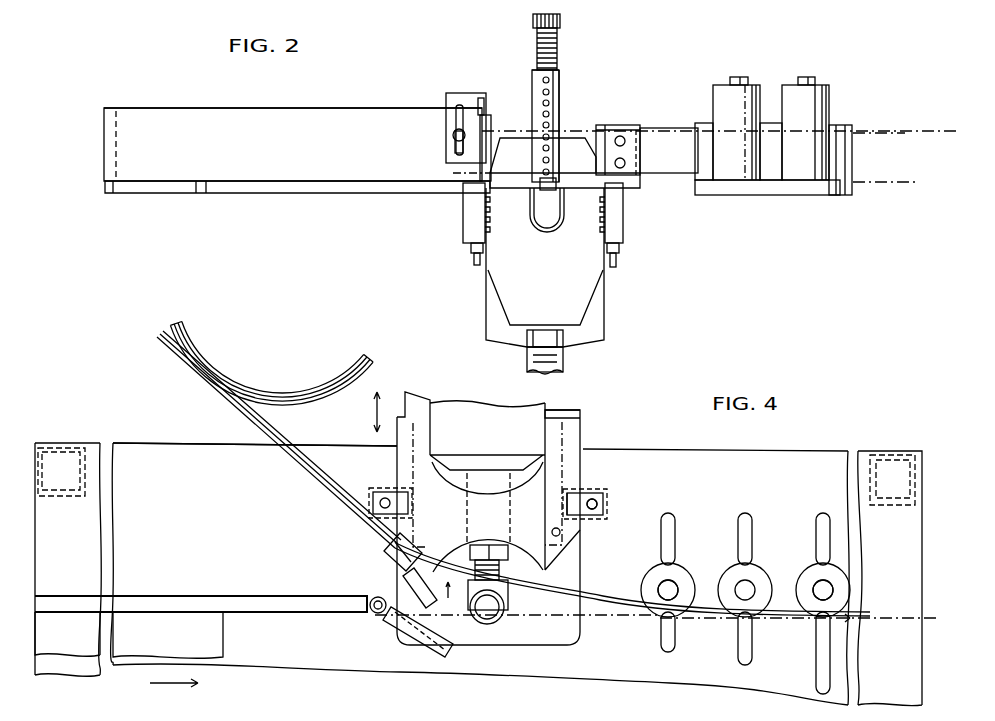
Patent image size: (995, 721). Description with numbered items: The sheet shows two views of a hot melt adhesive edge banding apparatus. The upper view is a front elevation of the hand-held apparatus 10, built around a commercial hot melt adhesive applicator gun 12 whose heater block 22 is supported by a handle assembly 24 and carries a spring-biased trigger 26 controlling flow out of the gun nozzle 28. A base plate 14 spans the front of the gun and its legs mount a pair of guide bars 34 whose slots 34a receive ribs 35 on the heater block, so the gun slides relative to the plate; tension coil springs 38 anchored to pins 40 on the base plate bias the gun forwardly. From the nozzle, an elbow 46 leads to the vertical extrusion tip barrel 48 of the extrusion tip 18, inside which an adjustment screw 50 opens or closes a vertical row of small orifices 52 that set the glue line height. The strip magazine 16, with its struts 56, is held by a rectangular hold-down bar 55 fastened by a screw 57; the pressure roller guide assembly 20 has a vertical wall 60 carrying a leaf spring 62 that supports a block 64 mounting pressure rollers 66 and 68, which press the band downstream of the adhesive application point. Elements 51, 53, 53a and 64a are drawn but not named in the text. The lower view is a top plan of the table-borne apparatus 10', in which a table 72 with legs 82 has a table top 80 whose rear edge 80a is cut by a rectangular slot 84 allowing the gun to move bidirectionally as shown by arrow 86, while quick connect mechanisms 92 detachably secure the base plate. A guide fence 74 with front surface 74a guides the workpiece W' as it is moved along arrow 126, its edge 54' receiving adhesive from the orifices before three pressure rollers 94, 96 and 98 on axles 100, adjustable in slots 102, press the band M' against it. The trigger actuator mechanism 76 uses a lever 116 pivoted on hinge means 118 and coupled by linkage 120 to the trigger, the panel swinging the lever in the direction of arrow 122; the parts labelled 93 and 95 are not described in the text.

In FIG. 2, the hot melt adhesive applicator gun type edge banding apparatus 10 is at (648, 39).
In FIG. 4, the apparatus 10' is at (777, 430).
In FIG. 2, the hot melt adhesive applicator gun 12 is at (615, 295).
In FIG. 4, the hot melt adhesive applicator gun 12 is at (566, 409).
In FIG. 2, the base plate 14 is at (590, 198).
In FIG. 2, the strip or band material magazine 16 is at (190, 108).
In FIG. 4, the strip or band material magazine 16 is at (321, 398).
In FIG. 2, the extrusion tip 18 is at (573, 103).
In FIG. 4, the extrusion tip 18 is at (508, 631).
In FIG. 2, the pressure roller guide assembly 20 is at (787, 59).
In FIG. 2, the heater block 22 is at (506, 283).
In FIG. 2, the handle assembly 24 is at (525, 360).
In FIG. 2, the trigger 26 is at (566, 360).
In FIG. 4, the gun nozzle 28 is at (476, 475).
In FIG. 2, the guide bars 34 is at (623, 240).
In FIG. 4, the guide bars 34 is at (582, 413).
In FIG. 2, the slots 34a is at (612, 210).
In FIG. 2, the ribs 35 is at (490, 200).
In FIG. 2, the tension coil springs 38 is at (470, 249).
In FIG. 2, the pins 40 is at (474, 263).
In FIG. 2, the elbow 46 is at (547, 220).
In FIG. 4, the elbow 46 is at (508, 590).
In FIG. 2, the extrusion tip barrel 48 is at (562, 78).
In FIG. 2, the adjustment screw 50 is at (558, 40).
In FIG. 4, the adjustment screw 50 is at (505, 622).
In FIG. 2, the guide block 51 is at (556, 182).
In FIG. 2, the orifices 52 is at (545, 112).
In FIG. 2, the slide bracket 53 is at (446, 108).
In FIG. 2, the bracket tab 53a is at (480, 98).
In FIG. 4, the edge 54' is at (139, 631).
In FIG. 2, the rectangular bar 55 is at (286, 110).
In FIG. 2, the struts 56 is at (202, 193).
In FIG. 2, the screw 57 is at (452, 138).
In FIG. 2, the vertical flat spring supporting wall 60 is at (602, 125).
In FIG. 2, the leaf spring 62 is at (665, 140).
In FIG. 2, the pressure roller support block 64 is at (850, 125).
In FIG. 2, the motor mount base 64a is at (768, 192).
In FIG. 2, the pressure roller 66 is at (728, 98).
In FIG. 2, the pressure roller 68 is at (818, 92).
In FIG. 4, the table 72 is at (820, 450).
In FIG. 4, the guide fence 74 is at (300, 616).
In FIG. 4, the fence front surface 74a is at (243, 616).
In FIG. 4, the trigger actuator mechanism 76 is at (505, 690).
In FIG. 4, the table top 80 is at (610, 448).
In FIG. 4, the rear vertical edge 80a is at (167, 442).
In FIG. 4, the legs 82 is at (70, 450).
In FIG. 4, the rectangular slot 84 is at (582, 578).
In FIG. 4, the arrow 86 is at (375, 412).
In FIG. 4, the quick connect mechanisms 92 is at (388, 487).
In FIG. 4, the clamp pin 93 is at (600, 506).
In FIG. 4, the clamp edge 95 is at (588, 515).
In FIG. 4, the pressure roller 94 is at (674, 570).
In FIG. 4, the pressure roller 96 is at (752, 570).
In FIG. 4, the pressure roller 98 is at (832, 576).
In FIG. 4, the axles 100 is at (672, 600).
In FIG. 4, the slots 102 is at (676, 528).
In FIG. 4, the pivotable lever 116 is at (432, 654).
In FIG. 4, the hinge means 118 is at (374, 613).
In FIG. 4, the linkage 120 is at (415, 610).
In FIG. 4, the arrow 122 is at (475, 632).
In FIG. 4, the arrow 126 is at (168, 685).
In FIG. 4, the band M' is at (513, 473).
In FIG. 4, the straight edge workpiece W' is at (157, 594).